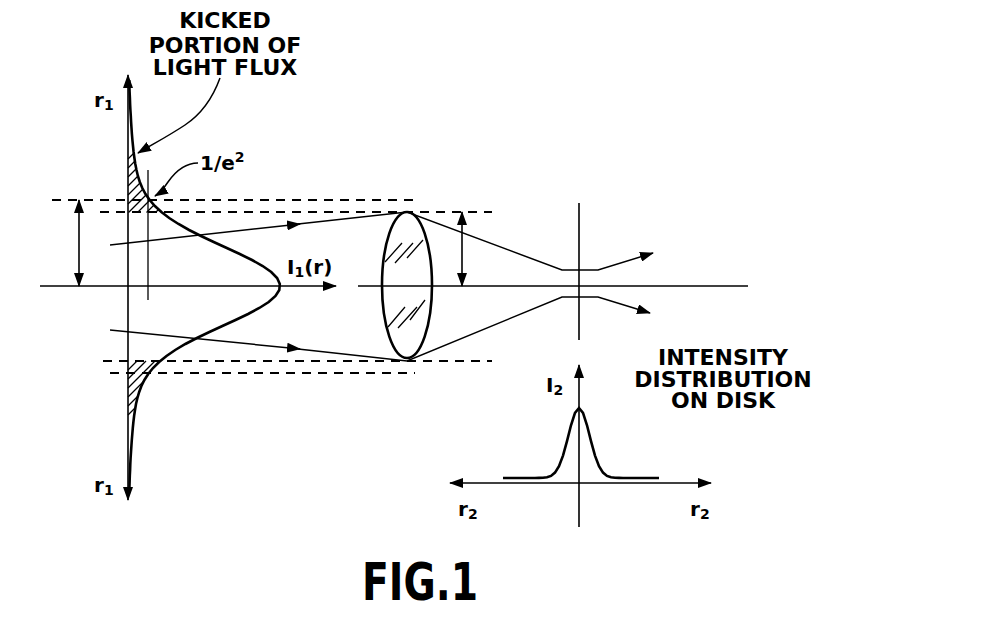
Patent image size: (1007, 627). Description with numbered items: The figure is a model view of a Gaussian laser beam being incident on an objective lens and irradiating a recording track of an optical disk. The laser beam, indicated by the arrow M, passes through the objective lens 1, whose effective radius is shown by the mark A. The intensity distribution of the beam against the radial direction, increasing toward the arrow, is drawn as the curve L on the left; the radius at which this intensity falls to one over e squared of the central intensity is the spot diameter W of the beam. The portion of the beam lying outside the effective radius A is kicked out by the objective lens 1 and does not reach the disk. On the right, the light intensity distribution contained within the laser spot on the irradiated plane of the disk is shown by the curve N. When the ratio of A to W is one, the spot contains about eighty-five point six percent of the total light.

The objective lens 1 is at (408, 353).
The laser beam M is at (333, 213).
The laser beam intensity distribution curve L is at (138, 393).
The light intensity distribution curve on disk N is at (597, 459).
The effective radius of objective lens A is at (451, 249).
The spot diameter of laser beam W is at (63, 243).